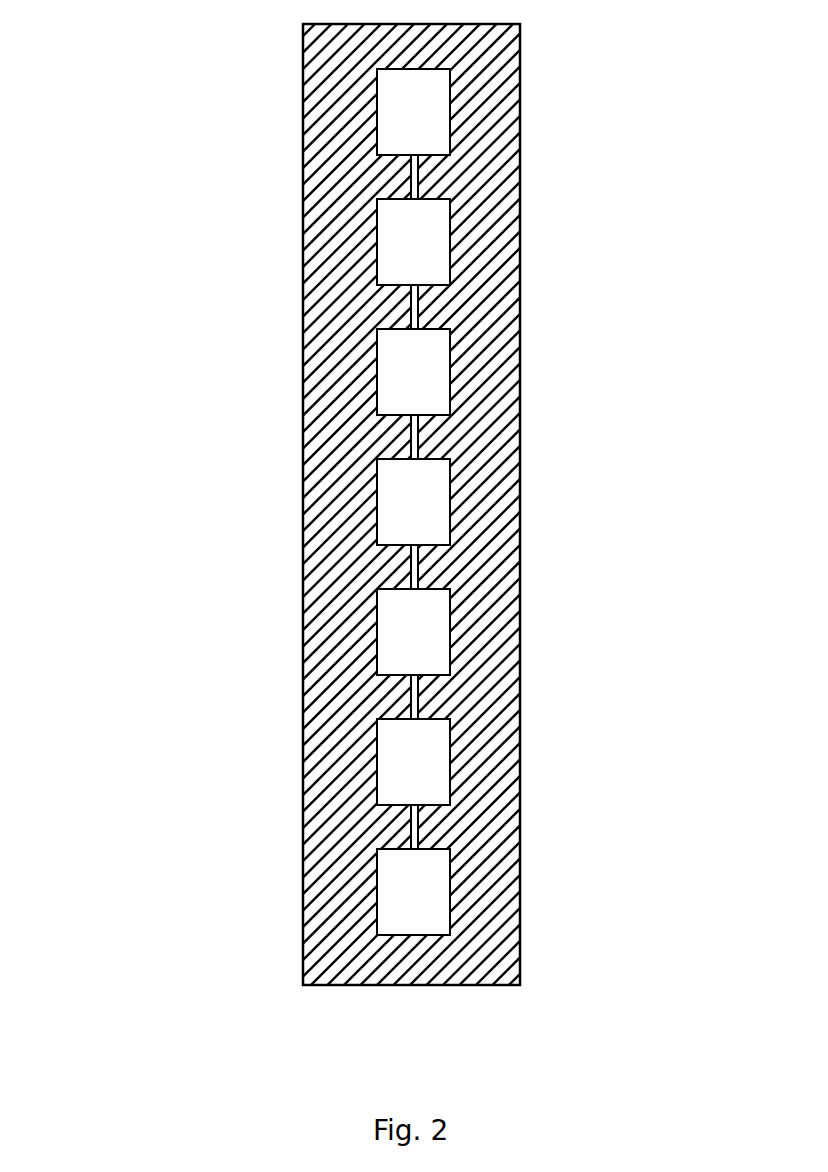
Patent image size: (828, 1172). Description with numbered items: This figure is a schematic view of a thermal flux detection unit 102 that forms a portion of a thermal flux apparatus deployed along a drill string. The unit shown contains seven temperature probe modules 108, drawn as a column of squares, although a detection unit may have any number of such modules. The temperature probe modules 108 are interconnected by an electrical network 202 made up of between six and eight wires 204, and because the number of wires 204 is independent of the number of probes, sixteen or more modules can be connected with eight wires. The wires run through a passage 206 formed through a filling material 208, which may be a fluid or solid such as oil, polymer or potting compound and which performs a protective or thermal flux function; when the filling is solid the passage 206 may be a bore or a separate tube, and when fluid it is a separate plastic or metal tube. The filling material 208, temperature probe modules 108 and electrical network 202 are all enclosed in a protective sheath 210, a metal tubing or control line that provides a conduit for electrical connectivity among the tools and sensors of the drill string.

The thermal flux detection unit 102 is at (414, 550).
The temperature probe modules 108 is at (377, 633).
The electrical network 202 is at (418, 697).
The wires 204 is at (400, 705).
The passage 206 is at (403, 310).
The filling material 208 is at (327, 272).
The protective sheath 210 is at (520, 547).